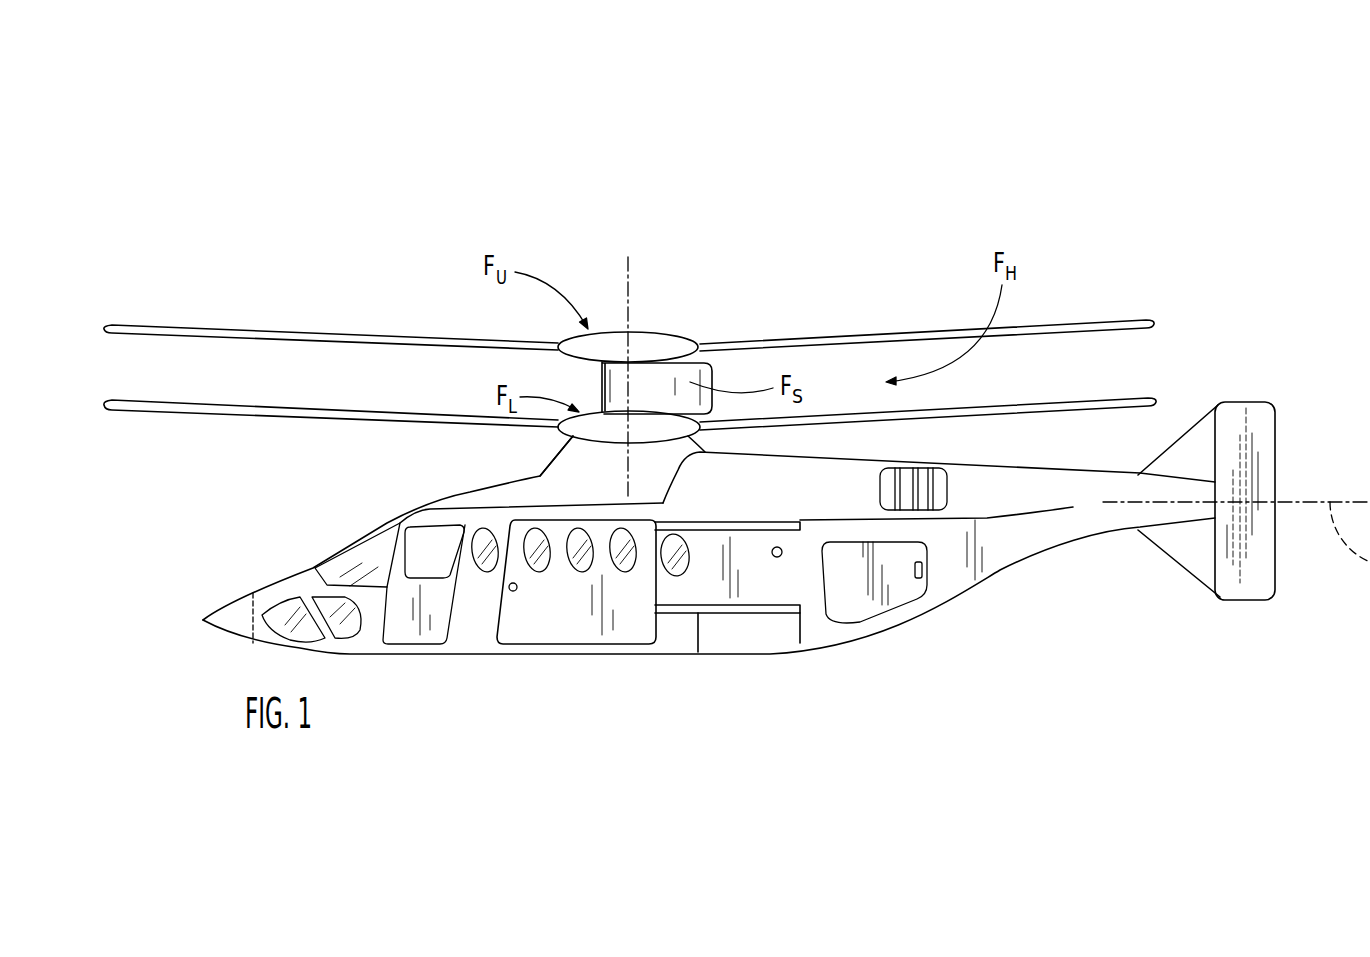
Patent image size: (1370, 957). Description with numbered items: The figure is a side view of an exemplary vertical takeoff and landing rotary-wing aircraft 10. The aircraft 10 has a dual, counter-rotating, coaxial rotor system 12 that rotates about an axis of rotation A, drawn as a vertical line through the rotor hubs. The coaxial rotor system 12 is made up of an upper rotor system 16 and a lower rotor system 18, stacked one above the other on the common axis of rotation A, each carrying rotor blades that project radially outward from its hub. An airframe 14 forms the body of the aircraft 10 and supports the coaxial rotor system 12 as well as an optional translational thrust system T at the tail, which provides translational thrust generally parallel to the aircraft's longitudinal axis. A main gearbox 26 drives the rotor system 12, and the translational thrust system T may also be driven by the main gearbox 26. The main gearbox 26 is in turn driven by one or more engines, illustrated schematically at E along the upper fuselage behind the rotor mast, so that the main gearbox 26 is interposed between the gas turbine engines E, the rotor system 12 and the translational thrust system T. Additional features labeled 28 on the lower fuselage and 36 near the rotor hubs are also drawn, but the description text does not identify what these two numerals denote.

The rotary-wing aircraft 10 is at (812, 272).
The coaxial rotor system 12 is at (670, 327).
The airframe 14 is at (413, 509).
The upper rotor system 16 is at (698, 332).
The lower rotor system 18 is at (568, 430).
The main gearbox 26 is at (607, 482).
The fuselage cabin 28 is at (577, 613).
The rotor mast 36 is at (548, 360).
The axis of rotation A is at (632, 308).
The engine E is at (1042, 490).
The translational thrust system T is at (1255, 380).